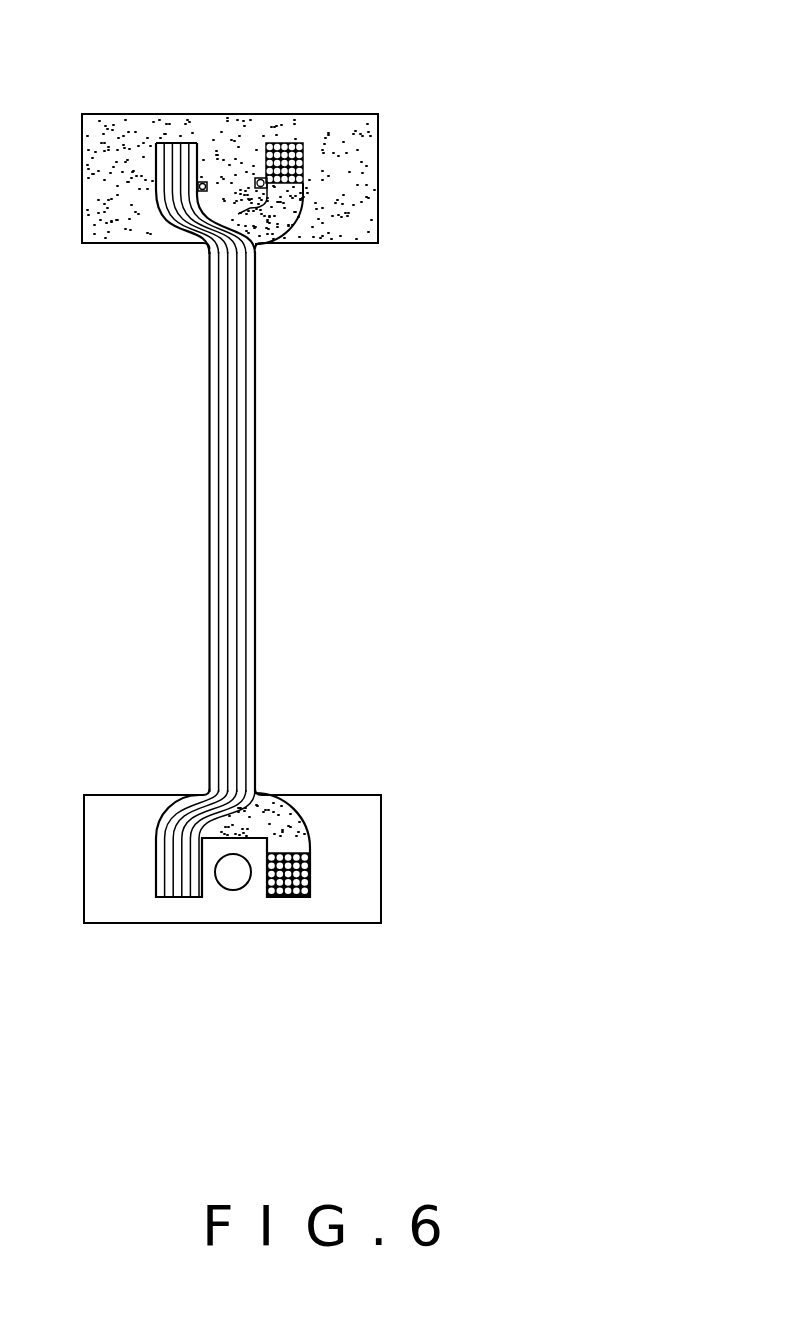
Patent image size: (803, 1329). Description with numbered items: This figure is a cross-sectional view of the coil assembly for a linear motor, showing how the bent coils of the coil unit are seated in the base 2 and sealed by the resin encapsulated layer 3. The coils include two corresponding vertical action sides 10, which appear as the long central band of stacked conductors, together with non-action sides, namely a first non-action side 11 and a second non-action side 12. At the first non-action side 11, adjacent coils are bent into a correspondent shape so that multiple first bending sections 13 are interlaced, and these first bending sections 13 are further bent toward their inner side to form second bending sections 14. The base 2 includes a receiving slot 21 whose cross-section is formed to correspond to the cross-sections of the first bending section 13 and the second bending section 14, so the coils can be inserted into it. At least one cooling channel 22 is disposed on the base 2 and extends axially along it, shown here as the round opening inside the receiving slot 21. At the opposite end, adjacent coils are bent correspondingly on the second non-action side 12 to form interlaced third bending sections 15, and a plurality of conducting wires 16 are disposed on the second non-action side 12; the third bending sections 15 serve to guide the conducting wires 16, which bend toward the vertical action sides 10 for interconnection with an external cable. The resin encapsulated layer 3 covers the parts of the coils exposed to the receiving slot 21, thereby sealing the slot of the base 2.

The base 2 is at (350, 862).
The resin encapsulated layer 3 is at (358, 197).
The vertical action sides 10 is at (232, 585).
The first non-action side 11 is at (234, 830).
The second non-action side 12 is at (233, 210).
The first bending section 13 is at (223, 818).
The second bending section 14 is at (182, 875).
The third bending section 15 is at (190, 200).
The conducting wires 16 is at (257, 182).
The receiving slot 21 is at (287, 893).
The cooling channel 22 is at (234, 874).